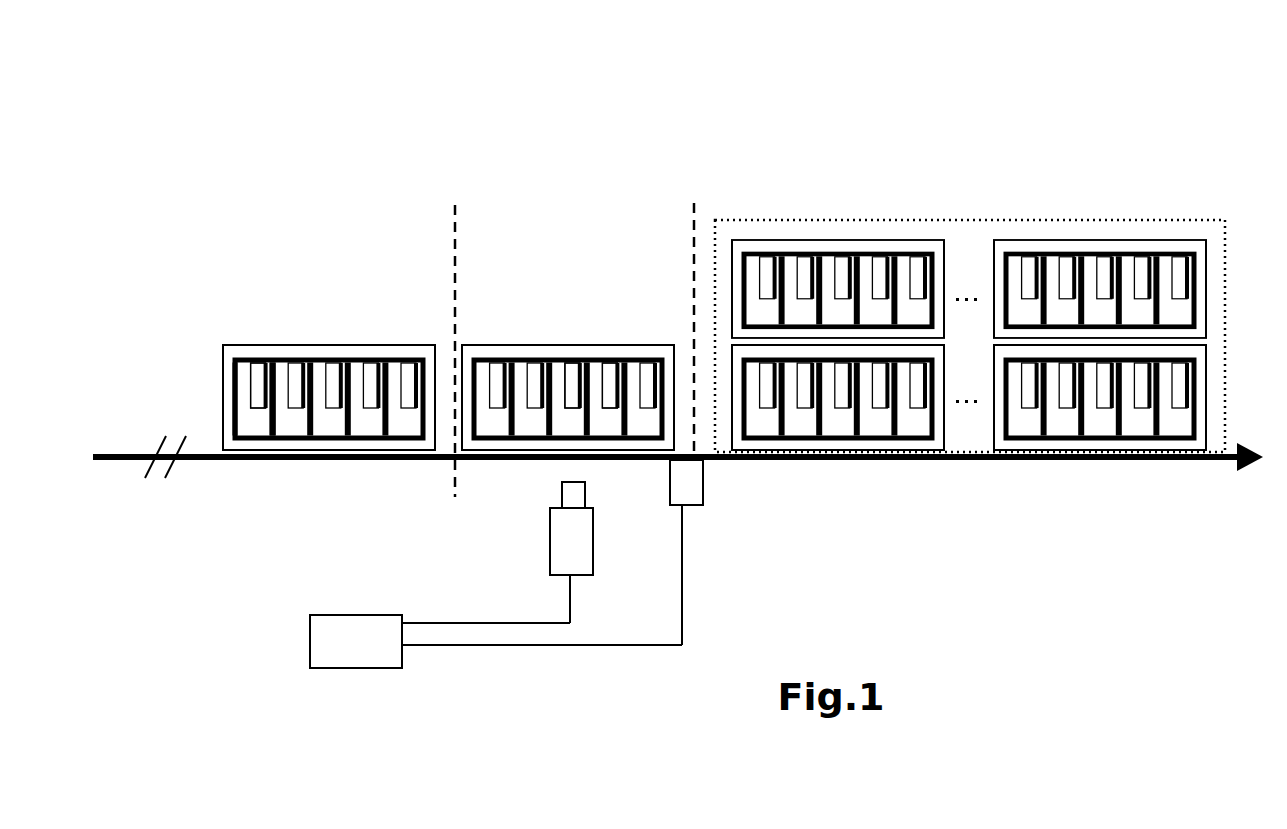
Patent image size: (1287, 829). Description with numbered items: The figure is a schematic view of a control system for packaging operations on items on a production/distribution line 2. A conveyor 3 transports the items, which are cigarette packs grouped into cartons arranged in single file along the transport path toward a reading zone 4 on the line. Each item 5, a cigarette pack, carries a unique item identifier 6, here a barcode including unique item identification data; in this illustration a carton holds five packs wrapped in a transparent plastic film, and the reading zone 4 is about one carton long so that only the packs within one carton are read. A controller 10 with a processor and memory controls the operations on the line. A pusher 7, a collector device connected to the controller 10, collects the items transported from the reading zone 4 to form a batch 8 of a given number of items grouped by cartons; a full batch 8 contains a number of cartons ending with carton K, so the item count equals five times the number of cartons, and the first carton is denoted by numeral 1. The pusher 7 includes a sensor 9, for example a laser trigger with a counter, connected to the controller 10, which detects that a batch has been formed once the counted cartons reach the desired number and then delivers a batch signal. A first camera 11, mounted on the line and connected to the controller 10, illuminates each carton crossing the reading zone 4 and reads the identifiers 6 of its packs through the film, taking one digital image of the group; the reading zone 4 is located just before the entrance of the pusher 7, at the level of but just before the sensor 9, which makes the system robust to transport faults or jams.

The item 1 is at (1207, 398).
The production/distribution line 2 is at (537, 163).
The conveyor 3 is at (287, 462).
The reading zone 4 is at (595, 257).
The item 5 is at (253, 425).
The unique item identifier 6 is at (253, 380).
The pusher 7 is at (993, 482).
The batch 8 is at (923, 217).
The sensor 9 is at (700, 473).
The controller 10 is at (322, 637).
The first camera 11 is at (560, 532).
The carton K is at (783, 242).